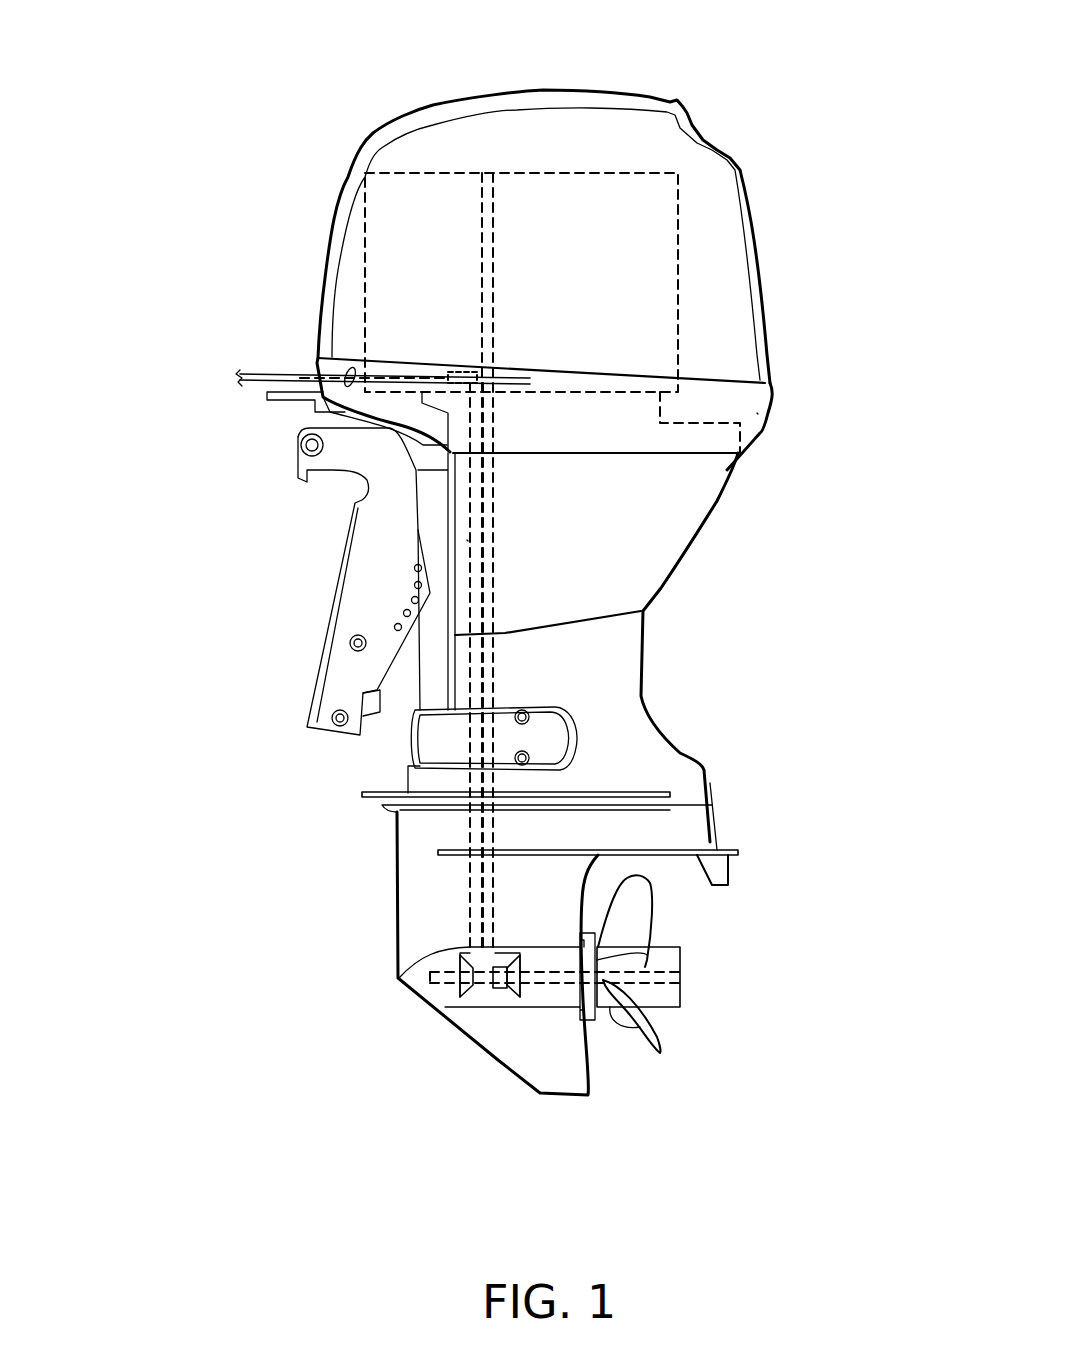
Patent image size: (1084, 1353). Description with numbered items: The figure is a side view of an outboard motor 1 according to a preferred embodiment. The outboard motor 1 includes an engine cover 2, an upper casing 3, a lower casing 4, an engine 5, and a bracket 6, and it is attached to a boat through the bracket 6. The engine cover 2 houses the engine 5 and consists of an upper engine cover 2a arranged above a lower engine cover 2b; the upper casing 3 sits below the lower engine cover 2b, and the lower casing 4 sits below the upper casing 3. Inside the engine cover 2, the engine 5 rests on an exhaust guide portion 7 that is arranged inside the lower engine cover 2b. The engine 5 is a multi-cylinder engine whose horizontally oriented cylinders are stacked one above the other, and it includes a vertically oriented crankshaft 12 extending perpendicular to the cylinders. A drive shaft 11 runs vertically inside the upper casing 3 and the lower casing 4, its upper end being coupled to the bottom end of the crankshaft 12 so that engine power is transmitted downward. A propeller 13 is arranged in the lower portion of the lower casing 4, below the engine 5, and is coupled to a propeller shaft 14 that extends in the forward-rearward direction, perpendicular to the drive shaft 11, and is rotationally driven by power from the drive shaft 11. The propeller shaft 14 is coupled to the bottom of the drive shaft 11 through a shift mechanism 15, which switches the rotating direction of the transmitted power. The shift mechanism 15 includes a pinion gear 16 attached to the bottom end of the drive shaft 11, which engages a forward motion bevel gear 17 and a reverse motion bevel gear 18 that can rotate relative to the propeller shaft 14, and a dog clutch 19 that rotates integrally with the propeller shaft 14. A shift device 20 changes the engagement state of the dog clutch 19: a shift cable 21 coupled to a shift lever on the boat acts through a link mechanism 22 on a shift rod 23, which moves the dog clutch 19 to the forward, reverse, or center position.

The outboard motor 1 is at (358, 93).
The engine cover 2 is at (760, 202).
The upper engine cover 2a is at (732, 250).
The lower engine cover 2b is at (757, 413).
The upper casing 3 is at (625, 655).
The lower casing 4 is at (705, 800).
The engine 5 is at (363, 263).
The bracket 6 is at (347, 540).
The exhaust guide portion 7 is at (700, 420).
The drive shaft 11 is at (493, 568).
The crankshaft 12 is at (482, 322).
The propeller 13 is at (627, 1013).
The propeller shaft 14 is at (557, 985).
The shift mechanism 15 is at (456, 998).
The pinion gear 16 is at (470, 950).
The forward motion bevel gear 17 is at (400, 975).
The reverse motion bevel gear 18 is at (507, 990).
The dog clutch 19 is at (492, 990).
The shift device 20 is at (462, 582).
The shift cable 21 is at (253, 377).
The link mechanism 22 is at (460, 370).
The shift rod 23 is at (467, 542).